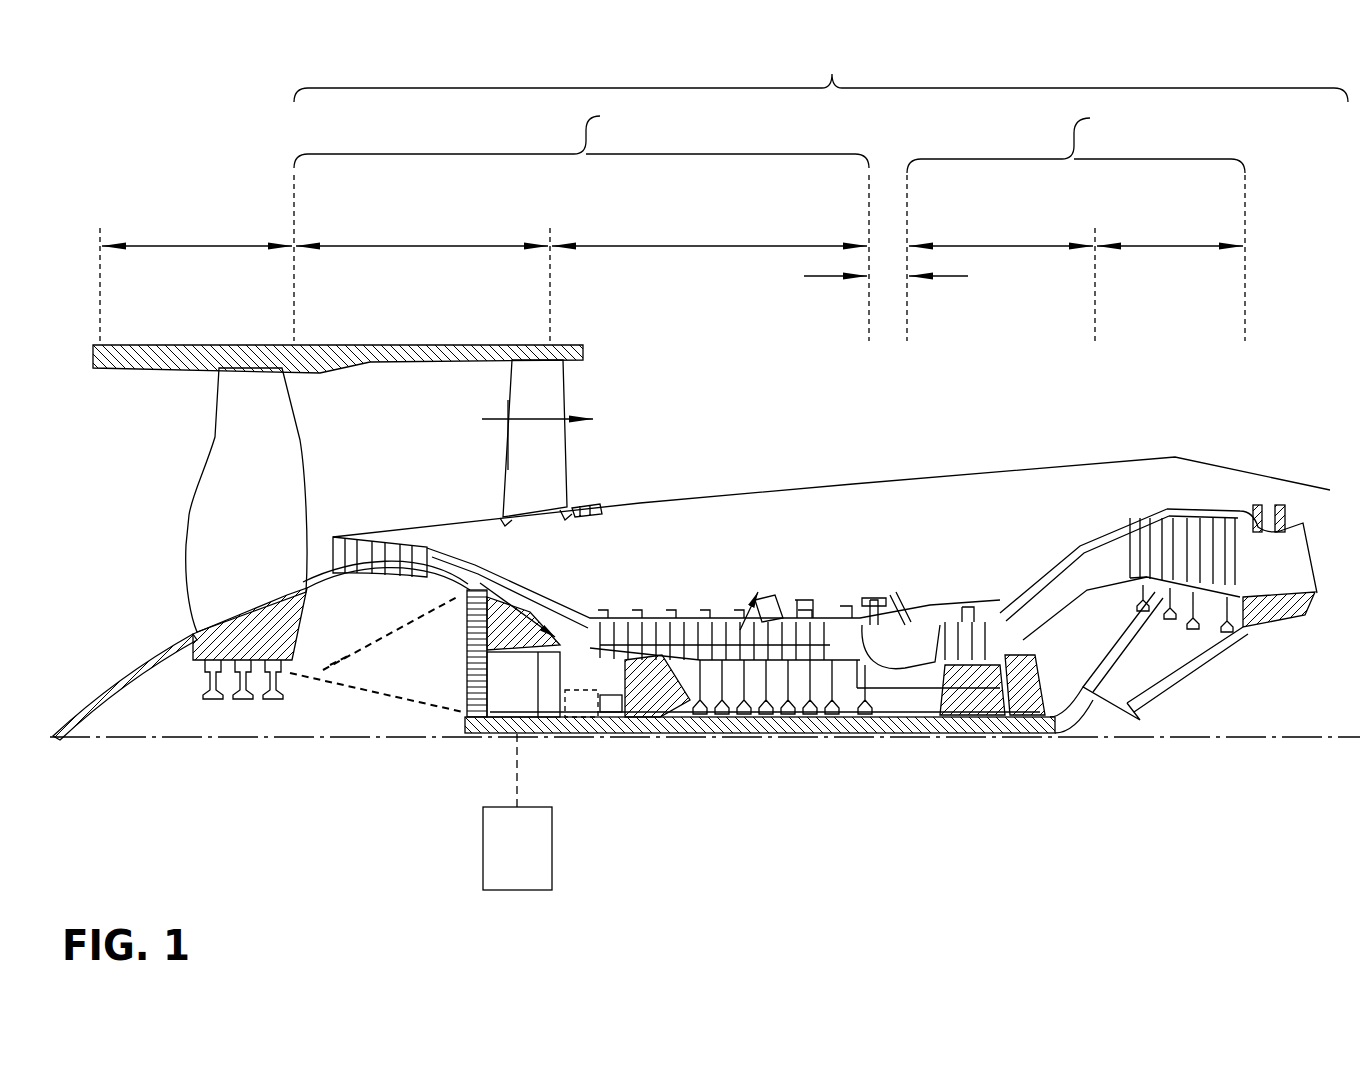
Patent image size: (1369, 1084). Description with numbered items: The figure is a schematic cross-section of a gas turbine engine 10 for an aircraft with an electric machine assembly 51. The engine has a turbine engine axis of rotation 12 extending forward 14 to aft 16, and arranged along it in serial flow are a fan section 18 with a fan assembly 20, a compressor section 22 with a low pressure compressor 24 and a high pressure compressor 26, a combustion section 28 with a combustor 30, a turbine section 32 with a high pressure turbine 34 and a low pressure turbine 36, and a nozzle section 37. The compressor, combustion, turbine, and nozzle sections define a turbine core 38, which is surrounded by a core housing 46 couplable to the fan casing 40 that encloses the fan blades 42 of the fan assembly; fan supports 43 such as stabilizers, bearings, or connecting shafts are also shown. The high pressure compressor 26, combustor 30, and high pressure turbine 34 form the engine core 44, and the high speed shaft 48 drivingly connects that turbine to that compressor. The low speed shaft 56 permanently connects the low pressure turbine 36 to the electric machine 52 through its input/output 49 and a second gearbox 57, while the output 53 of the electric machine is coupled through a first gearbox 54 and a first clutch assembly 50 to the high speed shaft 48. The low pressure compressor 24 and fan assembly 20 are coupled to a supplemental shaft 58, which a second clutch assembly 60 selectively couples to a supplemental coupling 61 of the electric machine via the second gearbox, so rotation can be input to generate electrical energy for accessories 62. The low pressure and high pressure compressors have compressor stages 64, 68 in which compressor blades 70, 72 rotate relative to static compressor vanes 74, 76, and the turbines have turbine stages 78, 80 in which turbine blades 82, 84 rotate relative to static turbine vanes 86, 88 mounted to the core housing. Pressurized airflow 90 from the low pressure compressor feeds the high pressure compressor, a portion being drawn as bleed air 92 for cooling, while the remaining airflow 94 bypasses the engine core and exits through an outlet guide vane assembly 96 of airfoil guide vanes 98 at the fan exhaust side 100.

The gas turbine engine 10 is at (1262, 270).
The turbine engine axis of rotation 12 is at (173, 738).
The forward 14 is at (99, 477).
The aft 16 is at (1311, 564).
The fan section 18 is at (199, 246).
The fan assembly 20 is at (172, 590).
The compressor section 22 is at (581, 135).
The low pressure compressor 24 is at (423, 246).
The high pressure compressor 26 is at (713, 246).
The combustion section 28 is at (822, 276).
The combustor 30 is at (910, 638).
The turbine section 32 is at (1076, 138).
The high pressure turbine 34 is at (1000, 246).
The low pressure turbine 36 is at (1166, 246).
The nozzle section 37 is at (1308, 540).
The turbine core 38 is at (821, 70).
The fan casing 40 is at (328, 346).
The fan blades 42 is at (267, 417).
The fan supports 43 is at (355, 673).
The engine core 44 is at (836, 518).
The core housing 46 is at (1080, 550).
The high speed shaft 48 is at (868, 690).
The input/output 49 is at (500, 715).
The first clutch assembly 50 is at (612, 714).
The electric machine assembly 51 is at (540, 725).
The electric machine 52 is at (508, 700).
The output 53 is at (568, 720).
The first gearbox 54 is at (588, 735).
The low speed shaft 56 is at (812, 735).
The second gearbox 57 is at (472, 628).
The supplemental shaft 58 is at (376, 651).
The second clutch assembly 60 is at (457, 607).
The supplemental coupling 61 is at (505, 660).
The accessories 62 is at (503, 868).
The compressor stages 64 is at (369, 504).
The compressor stages 68 is at (725, 594).
The compressor blades 70 is at (389, 528).
The compressor blades 72 is at (640, 643).
The static compressor vanes 74 is at (350, 540).
The static compressor vanes 76 is at (617, 618).
The turbine stages 78 is at (977, 619).
The turbine stages 80 is at (1223, 518).
The turbine blades 82 is at (1001, 642).
The turbine blades 84 is at (1228, 505).
The static turbine vanes 86 is at (948, 630).
The static turbine vanes 88 is at (1215, 508).
The pressurized airflow 90 is at (486, 640).
The bleed air 92 is at (735, 617).
The airflow 94 is at (499, 419).
The outlet guide vane assembly 96 is at (580, 478).
The airfoil guide vanes 98 is at (513, 453).
The fan exhaust side 100 is at (586, 392).